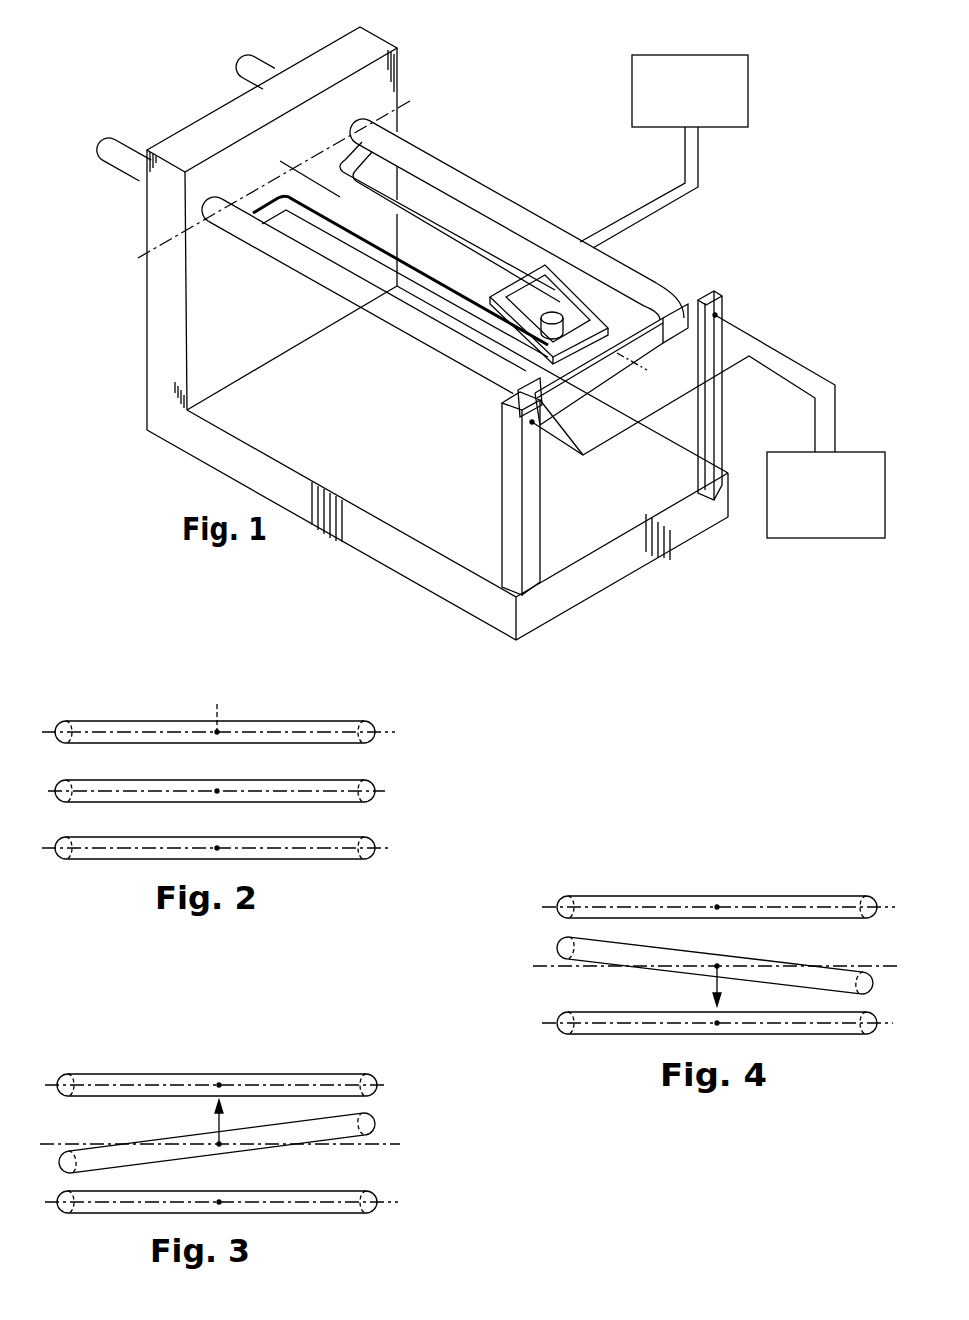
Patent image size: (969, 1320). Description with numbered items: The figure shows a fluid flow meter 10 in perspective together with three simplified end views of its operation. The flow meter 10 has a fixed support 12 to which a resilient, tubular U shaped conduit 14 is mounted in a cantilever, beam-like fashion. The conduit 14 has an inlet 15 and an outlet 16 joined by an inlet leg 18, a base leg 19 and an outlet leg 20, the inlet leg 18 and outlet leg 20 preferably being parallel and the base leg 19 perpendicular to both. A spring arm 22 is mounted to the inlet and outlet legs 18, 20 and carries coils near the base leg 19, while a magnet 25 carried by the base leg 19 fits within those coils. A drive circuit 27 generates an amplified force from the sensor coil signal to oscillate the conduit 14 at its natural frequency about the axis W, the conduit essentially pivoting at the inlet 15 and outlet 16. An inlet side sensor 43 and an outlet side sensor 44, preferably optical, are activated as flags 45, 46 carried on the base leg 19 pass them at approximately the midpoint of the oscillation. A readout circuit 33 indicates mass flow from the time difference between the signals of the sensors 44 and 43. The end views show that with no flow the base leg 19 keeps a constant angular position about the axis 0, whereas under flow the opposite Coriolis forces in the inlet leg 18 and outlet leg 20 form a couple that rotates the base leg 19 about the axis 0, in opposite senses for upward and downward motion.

In FIG. 1, the flow meter 10 is at (465, 104).
In FIG. 1, the fixed support 12 is at (382, 43).
In FIG. 1, the U shaped conduit 14 is at (388, 237).
In FIG. 2, the U shaped conduit 14 is at (238, 790).
In FIG. 3, the U shaped conduit 14 is at (225, 1113).
In FIG. 4, the U shaped conduit 14 is at (705, 954).
In FIG. 1, the inlet 15 is at (221, 197).
In FIG. 1, the outlet 16 is at (364, 120).
In FIG. 1, the inlet leg 18 is at (390, 316).
In FIG. 1, the base leg 19 is at (599, 362).
In FIG. 2, the base leg 19 is at (92, 782).
In FIG. 3, the base leg 19 is at (355, 1113).
In FIG. 4, the base leg 19 is at (740, 960).
In FIG. 1, the outlet leg 20 is at (627, 267).
In FIG. 1, the spring arm 22 is at (420, 230).
In FIG. 1, the magnet 25 is at (555, 316).
In FIG. 1, the drive circuit 27 is at (748, 98).
In FIG. 1, the readout circuit 33 is at (838, 538).
In FIG. 1, the inlet side sensor 43 is at (518, 400).
In FIG. 1, the outlet side sensor 44 is at (703, 295).
In FIG. 1, the flag 45 is at (550, 398).
In FIG. 1, the flag 46 is at (678, 333).
In FIG. 1, the axis O-O 0 is at (465, 268).
In FIG. 2, the axis O-O 0 is at (216, 708).
In FIG. 1, the axis W- W is at (281, 176).